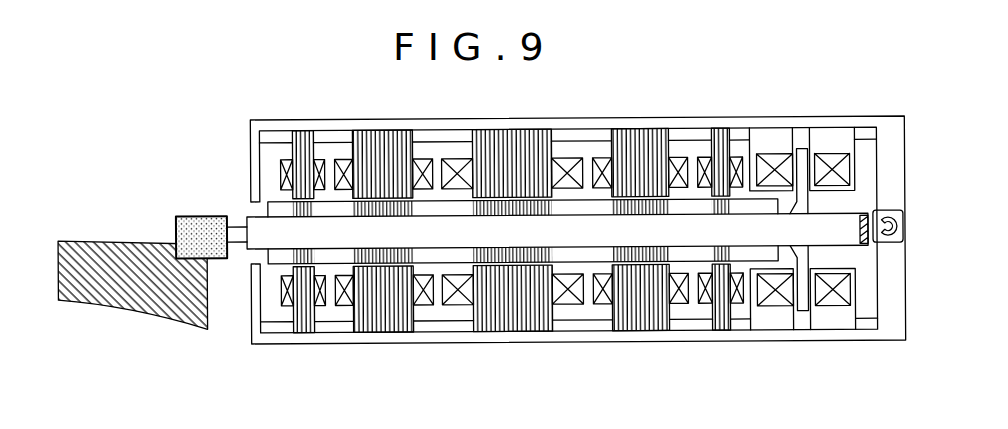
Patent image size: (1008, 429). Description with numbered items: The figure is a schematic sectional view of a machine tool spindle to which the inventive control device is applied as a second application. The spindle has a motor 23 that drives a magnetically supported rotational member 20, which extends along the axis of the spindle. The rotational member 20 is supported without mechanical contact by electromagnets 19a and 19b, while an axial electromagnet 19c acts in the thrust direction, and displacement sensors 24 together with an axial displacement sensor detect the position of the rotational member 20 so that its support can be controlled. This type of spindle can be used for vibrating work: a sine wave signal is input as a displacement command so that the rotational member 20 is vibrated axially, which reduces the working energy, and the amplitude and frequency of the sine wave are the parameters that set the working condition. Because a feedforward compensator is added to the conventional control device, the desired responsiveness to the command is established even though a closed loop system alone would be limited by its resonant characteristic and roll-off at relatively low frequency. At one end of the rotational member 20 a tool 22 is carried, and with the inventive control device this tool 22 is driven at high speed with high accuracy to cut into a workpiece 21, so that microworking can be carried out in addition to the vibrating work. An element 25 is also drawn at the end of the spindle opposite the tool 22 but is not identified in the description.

The first stator unit 19a is at (380, 115).
The second stator unit 19b is at (627, 113).
The third stator unit (coil units) 19c is at (828, 344).
The rotary shaft 20 is at (250, 208).
The rotary table 21 is at (120, 309).
The coupling 22 is at (192, 212).
The central stator core 23 is at (498, 343).
The housing frame 24 is at (280, 116).
The bearing 25 is at (907, 222).